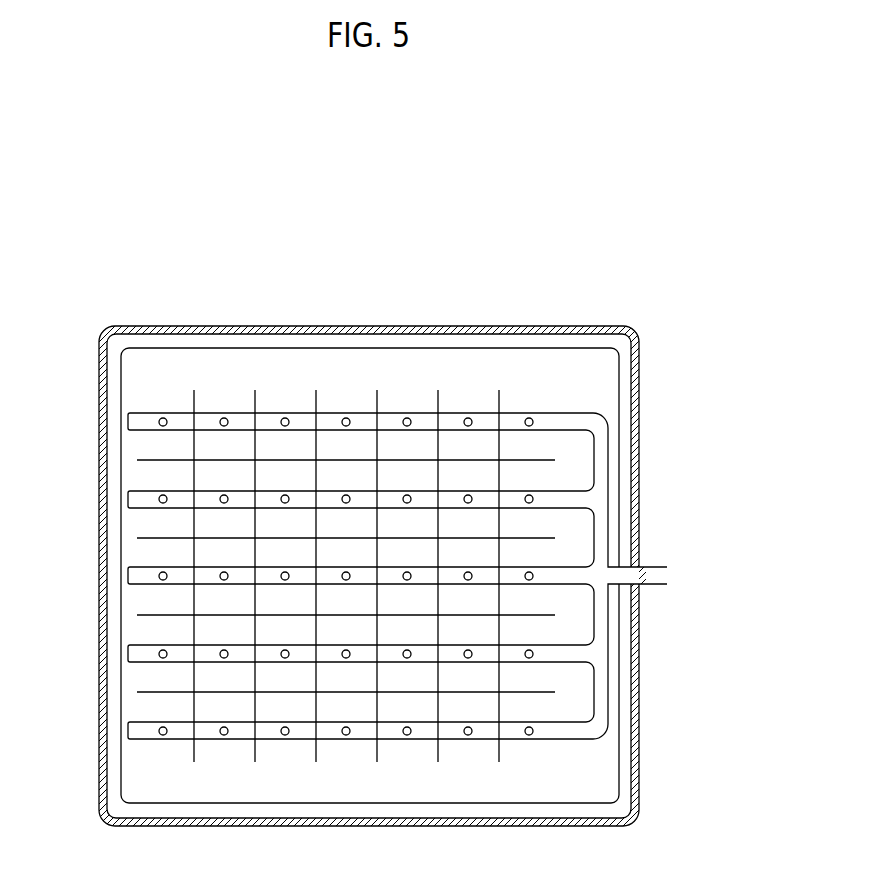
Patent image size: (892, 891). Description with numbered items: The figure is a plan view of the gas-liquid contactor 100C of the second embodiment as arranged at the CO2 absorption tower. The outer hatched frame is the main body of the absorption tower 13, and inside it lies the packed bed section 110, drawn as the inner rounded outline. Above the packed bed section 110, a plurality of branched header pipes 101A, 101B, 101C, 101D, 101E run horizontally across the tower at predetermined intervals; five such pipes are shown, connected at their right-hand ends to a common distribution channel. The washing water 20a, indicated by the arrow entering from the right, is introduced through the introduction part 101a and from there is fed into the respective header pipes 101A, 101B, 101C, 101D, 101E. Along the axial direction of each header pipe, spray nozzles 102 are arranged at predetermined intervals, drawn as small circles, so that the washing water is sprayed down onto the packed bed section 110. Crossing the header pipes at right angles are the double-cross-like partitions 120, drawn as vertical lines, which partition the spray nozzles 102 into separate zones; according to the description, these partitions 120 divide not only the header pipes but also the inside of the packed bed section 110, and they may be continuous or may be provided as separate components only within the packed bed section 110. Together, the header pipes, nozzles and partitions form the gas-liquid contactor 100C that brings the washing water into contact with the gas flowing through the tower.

The absorption tower 13 is at (282, 323).
The packed bed section 110 is at (569, 343).
The gas-liquid contactor 100C is at (582, 769).
The introduction part 101a is at (657, 590).
The header pipe 101A is at (550, 413).
The header pipe 101B is at (550, 491).
The header pipe 101C is at (550, 567).
The header pipe 101D is at (551, 645).
The header pipe 101E is at (551, 722).
The spray nozzles 102 is at (467, 416).
The partitions 120 is at (502, 752).
The washing water 20a is at (686, 576).